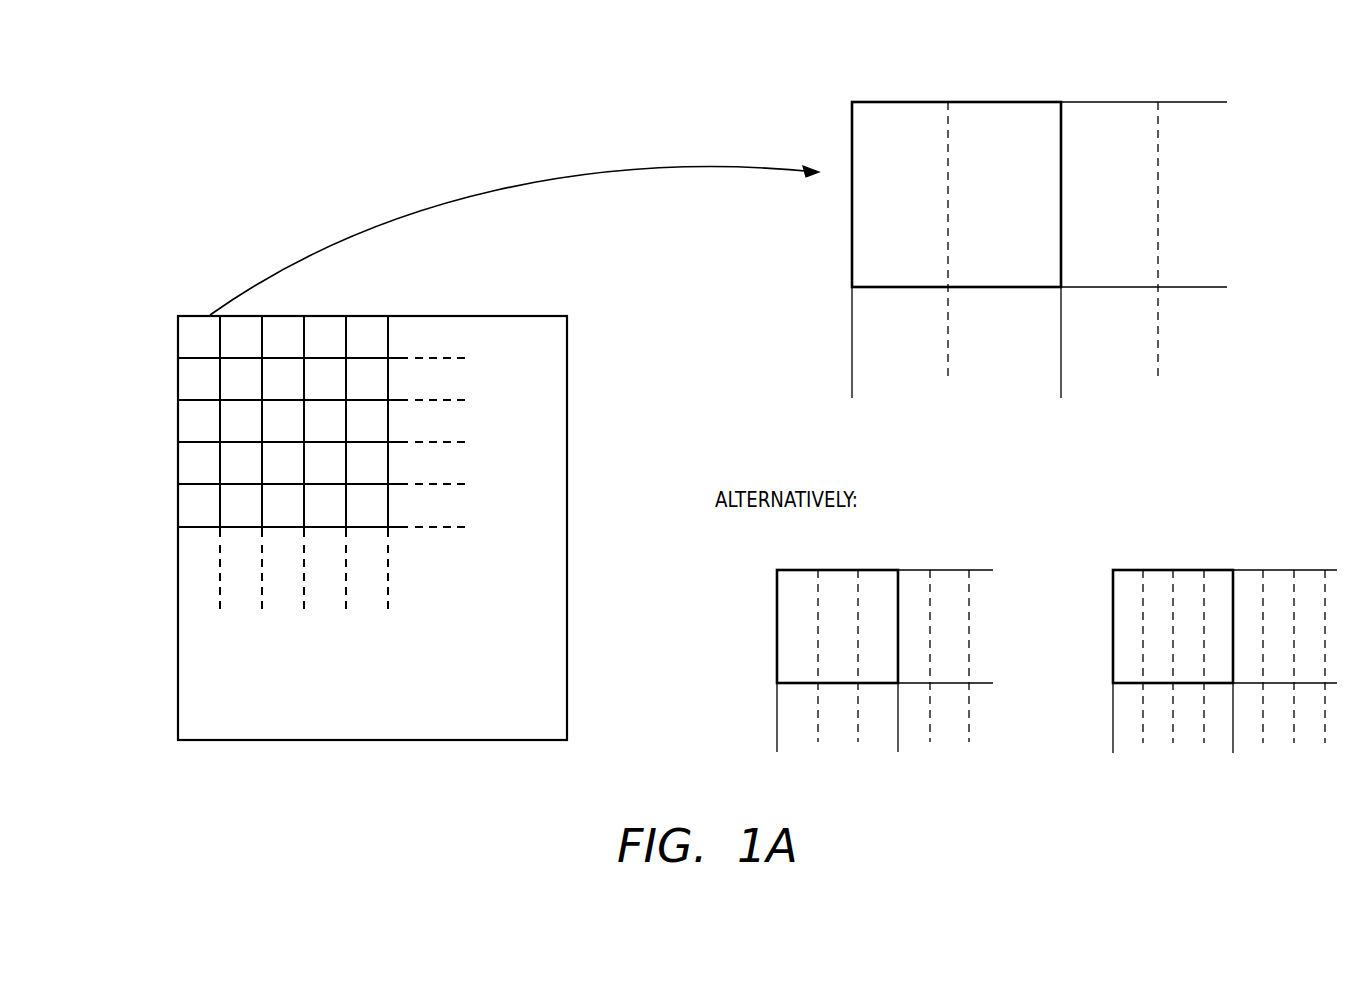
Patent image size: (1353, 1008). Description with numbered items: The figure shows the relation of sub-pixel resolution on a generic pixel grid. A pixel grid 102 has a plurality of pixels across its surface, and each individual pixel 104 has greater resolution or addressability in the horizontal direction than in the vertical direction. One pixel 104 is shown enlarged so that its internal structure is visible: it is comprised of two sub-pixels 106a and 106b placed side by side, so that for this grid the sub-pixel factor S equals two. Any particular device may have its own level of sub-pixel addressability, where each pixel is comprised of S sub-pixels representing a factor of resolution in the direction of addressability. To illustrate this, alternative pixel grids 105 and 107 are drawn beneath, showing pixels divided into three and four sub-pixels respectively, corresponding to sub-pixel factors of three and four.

The pixel grid 102 is at (178, 672).
The pixel 104 is at (197, 334).
The alternative pixel grid 105 is at (863, 560).
The sub-pixel 106a is at (880, 129).
The sub-pixel 106b is at (1017, 125).
The alternative pixel grid 107 is at (1193, 560).